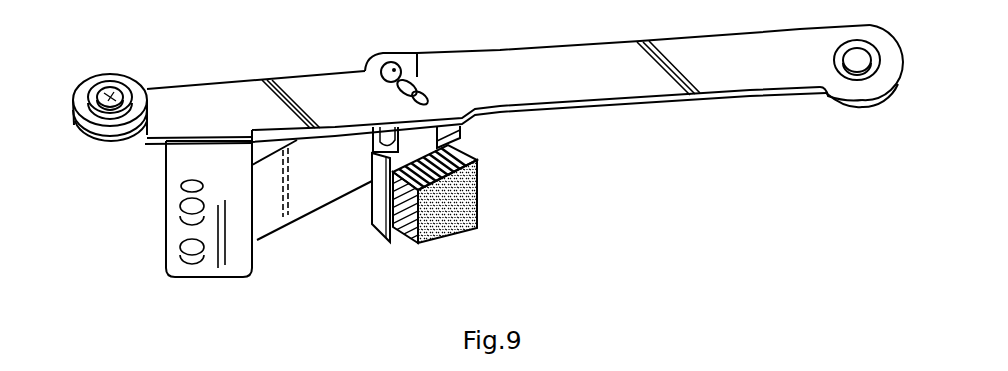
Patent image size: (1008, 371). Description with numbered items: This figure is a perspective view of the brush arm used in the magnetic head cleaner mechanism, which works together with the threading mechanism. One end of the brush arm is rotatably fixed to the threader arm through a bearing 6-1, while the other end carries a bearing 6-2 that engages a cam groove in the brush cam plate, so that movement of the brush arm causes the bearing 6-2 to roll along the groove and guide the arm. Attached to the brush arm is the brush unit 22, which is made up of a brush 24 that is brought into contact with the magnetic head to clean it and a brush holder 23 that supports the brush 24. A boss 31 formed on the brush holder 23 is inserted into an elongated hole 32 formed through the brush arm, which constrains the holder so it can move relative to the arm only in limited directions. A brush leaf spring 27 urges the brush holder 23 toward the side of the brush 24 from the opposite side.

The bearing 6-1 is at (850, 80).
The bearing 6-2 is at (112, 150).
The brush unit 22 is at (340, 271).
The brush holder 23 is at (373, 223).
The brush 24 is at (473, 230).
The brush leaf spring 27 is at (323, 180).
The boss 31 is at (441, 84).
The elongated hole 32 is at (415, 53).